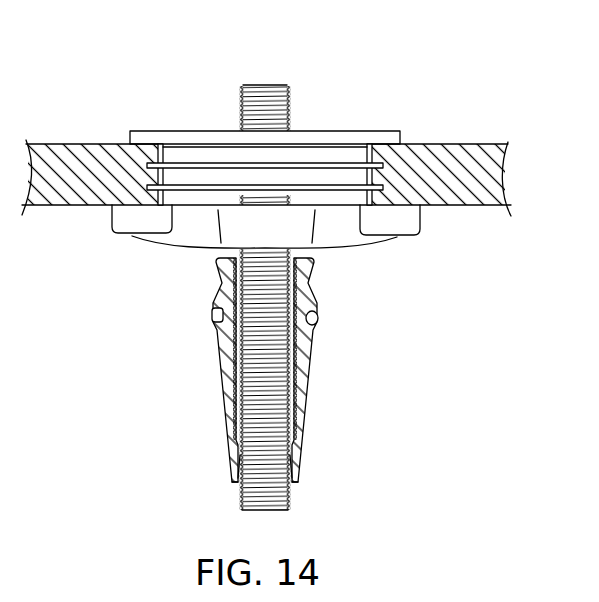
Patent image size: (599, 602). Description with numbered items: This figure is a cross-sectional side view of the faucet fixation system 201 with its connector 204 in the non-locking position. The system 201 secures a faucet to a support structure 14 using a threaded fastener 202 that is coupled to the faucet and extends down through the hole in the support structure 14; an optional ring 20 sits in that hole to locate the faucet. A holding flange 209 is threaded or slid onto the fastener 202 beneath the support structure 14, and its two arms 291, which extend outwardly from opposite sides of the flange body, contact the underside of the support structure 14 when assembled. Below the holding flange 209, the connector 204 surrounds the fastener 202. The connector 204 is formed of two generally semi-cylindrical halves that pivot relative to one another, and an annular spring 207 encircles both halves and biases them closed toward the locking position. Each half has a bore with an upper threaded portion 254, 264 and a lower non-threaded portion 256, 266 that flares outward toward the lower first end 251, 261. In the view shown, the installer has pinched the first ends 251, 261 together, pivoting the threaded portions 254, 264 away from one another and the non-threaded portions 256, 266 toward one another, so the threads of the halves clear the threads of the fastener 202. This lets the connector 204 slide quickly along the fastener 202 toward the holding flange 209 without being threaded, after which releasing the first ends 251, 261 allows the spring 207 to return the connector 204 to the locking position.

The support structure 14 is at (446, 150).
The ring 20 is at (338, 137).
The faucet fixation system 201 is at (183, 80).
The fastener 202 is at (258, 102).
The holding flange 209 is at (174, 266).
The arms 291 is at (128, 223).
The connector 204 is at (322, 398).
The threaded portion 264 is at (302, 284).
The threaded portion 254 is at (220, 327).
The spring 207 is at (316, 322).
The non-threaded portion 256 is at (240, 446).
The non-threaded portion 266 is at (290, 449).
The first end 251 is at (234, 480).
The first end 261 is at (300, 480).